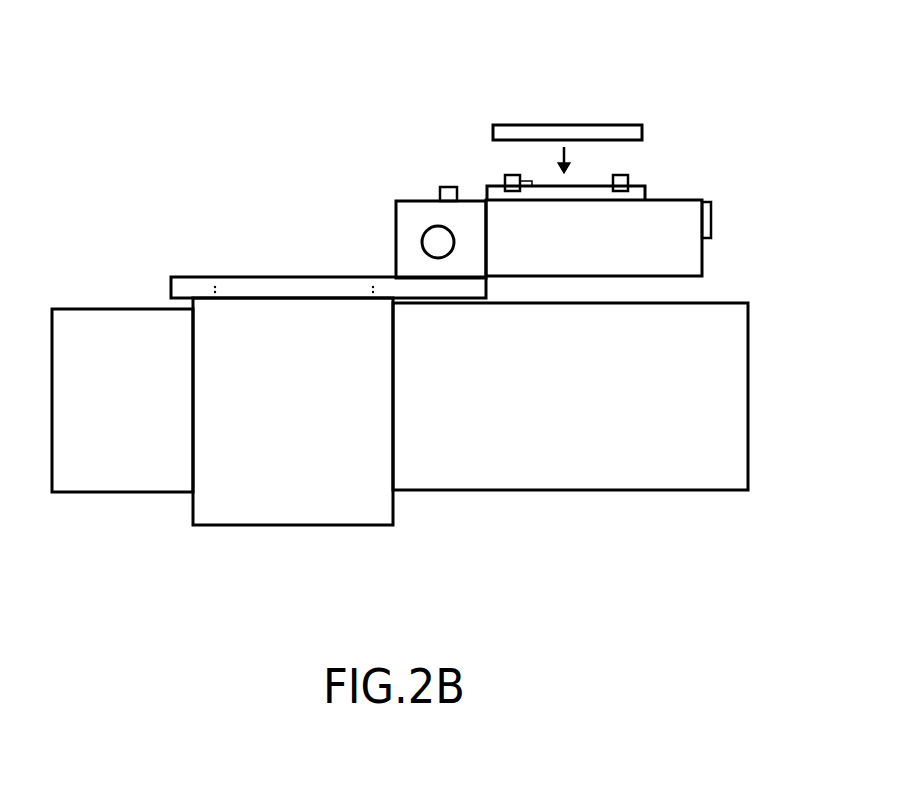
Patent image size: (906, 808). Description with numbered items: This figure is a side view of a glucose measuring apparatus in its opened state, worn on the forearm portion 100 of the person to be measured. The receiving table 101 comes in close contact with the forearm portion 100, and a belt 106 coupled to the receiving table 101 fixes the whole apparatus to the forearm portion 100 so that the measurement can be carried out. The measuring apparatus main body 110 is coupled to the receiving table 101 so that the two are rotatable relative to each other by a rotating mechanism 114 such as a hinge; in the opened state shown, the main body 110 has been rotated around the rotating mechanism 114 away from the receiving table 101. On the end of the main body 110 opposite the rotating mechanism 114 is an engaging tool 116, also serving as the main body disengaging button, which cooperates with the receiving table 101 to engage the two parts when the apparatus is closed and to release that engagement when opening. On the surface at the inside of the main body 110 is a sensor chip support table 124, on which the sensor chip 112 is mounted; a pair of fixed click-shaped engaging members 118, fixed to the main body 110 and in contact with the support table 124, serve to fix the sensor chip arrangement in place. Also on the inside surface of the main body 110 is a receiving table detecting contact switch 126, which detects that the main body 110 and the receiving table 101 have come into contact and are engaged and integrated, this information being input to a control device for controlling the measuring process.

The forearm portion 100 is at (118, 478).
The receiving table 101 is at (185, 287).
The belt 106 is at (307, 505).
The measuring apparatus main body 110 is at (688, 265).
The sensor chip 112 is at (572, 132).
The rotating mechanism 114 is at (433, 240).
The engaging tool 116 is at (710, 215).
The fixed click-shaped engaging members 118 is at (505, 177).
The sensor chip support table 124 is at (633, 197).
The receiving table detecting contact switch 126 is at (440, 195).